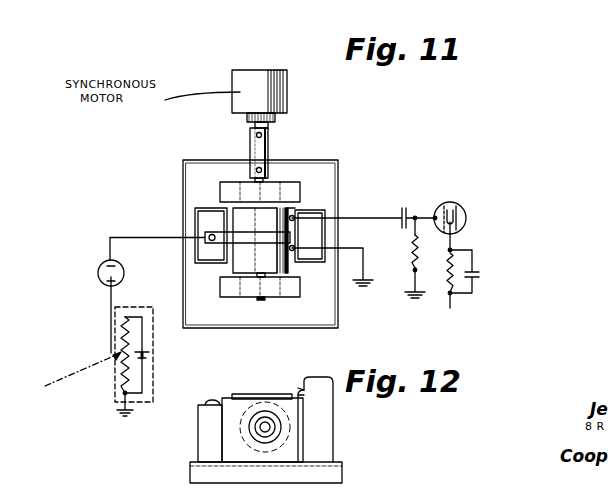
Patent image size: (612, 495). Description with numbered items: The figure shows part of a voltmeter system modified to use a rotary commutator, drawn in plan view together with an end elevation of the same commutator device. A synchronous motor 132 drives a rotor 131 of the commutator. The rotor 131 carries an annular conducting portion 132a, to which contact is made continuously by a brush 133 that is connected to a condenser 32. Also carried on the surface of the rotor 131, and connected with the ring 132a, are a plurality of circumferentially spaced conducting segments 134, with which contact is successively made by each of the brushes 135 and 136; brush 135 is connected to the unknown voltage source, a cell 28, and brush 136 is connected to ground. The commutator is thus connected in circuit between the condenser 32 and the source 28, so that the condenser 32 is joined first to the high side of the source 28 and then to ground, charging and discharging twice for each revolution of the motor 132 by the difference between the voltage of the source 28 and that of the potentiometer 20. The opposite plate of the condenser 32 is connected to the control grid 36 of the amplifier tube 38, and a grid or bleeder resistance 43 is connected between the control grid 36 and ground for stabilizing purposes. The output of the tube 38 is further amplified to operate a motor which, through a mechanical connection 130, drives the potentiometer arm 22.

In FIG. 11, the synchronous motor 132 is at (287, 96).
In FIG. 11, the rotor 131 is at (240, 183).
In FIG. 12, the rotor 131 is at (240, 442).
In FIG. 11, the conducting segments 134 is at (245, 265).
In FIG. 11, the brush 135 is at (222, 237).
In FIG. 12, the brush 135 is at (258, 386).
In FIG. 11, the brush 136 is at (298, 262).
In FIG. 12, the brush 136 is at (304, 396).
In FIG. 11, the brush 133 is at (300, 215).
In FIG. 11, the annular conducting portion 132a is at (300, 207).
In FIG. 11, the cell 28 is at (98, 270).
In FIG. 11, the potentiometer 20 is at (153, 372).
In FIG. 11, the potentiometer arm 22 is at (120, 360).
In FIG. 11, the mechanical connection 130 is at (54, 375).
In FIG. 11, the condenser 32 is at (405, 206).
In FIG. 11, the control grid 36 is at (447, 206).
In FIG. 11, the tube 38 is at (466, 212).
In FIG. 11, the grid or bleeder resistance 43 is at (414, 256).